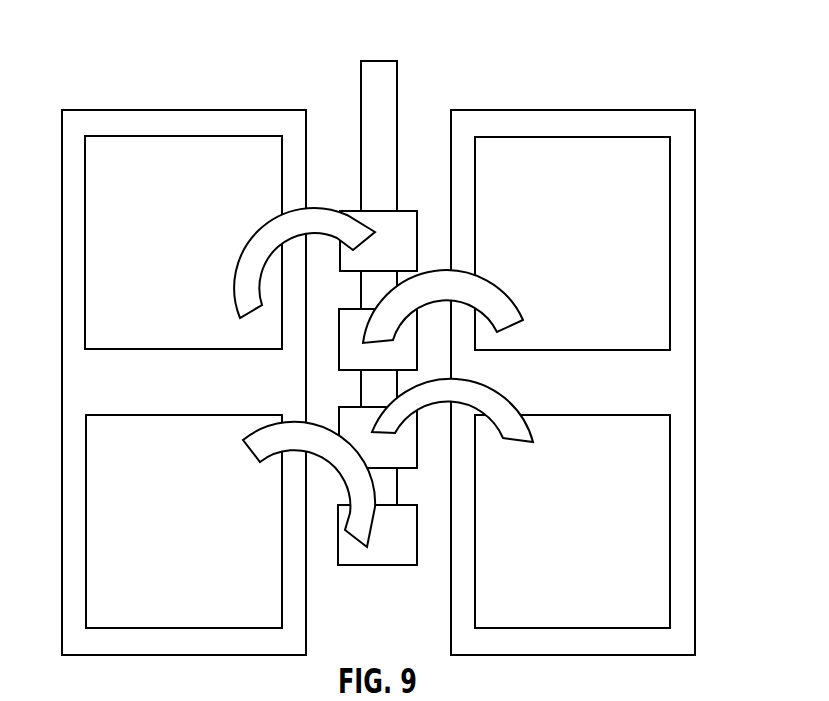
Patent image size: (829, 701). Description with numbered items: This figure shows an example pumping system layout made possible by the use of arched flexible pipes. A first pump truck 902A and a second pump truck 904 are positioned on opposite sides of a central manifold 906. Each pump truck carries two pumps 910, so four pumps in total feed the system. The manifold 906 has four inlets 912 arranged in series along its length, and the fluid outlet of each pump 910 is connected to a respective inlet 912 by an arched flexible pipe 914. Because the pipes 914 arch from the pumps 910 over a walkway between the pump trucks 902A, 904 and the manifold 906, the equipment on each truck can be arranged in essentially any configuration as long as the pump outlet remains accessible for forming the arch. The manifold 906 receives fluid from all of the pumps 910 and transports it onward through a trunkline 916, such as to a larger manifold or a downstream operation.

The first pump truck 902A is at (630, 110).
The second pump truck 904 is at (127, 110).
The manifold 906 is at (291, 78).
The pump 910 is at (205, 257).
The inlet 912 is at (405, 223).
The arched flexible pipe 914 is at (272, 238).
The trunkline 916 is at (382, 75).